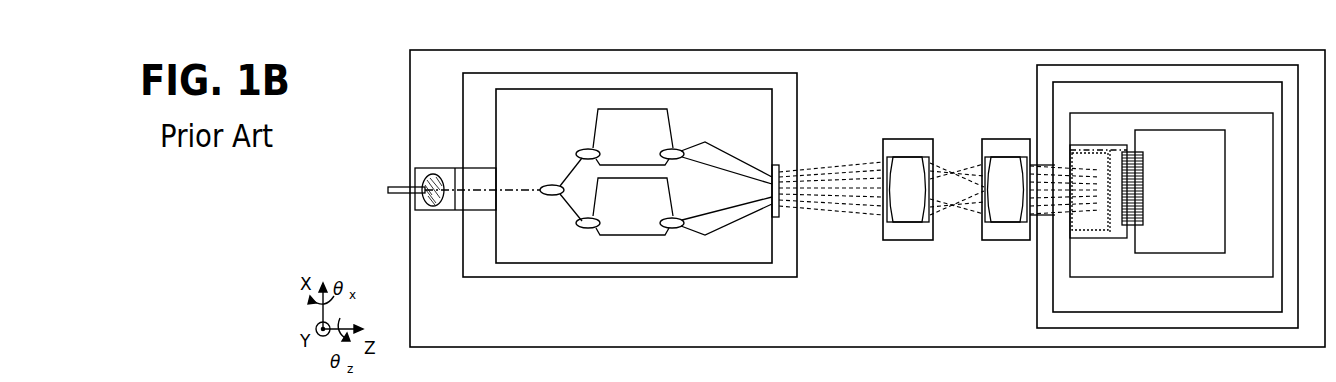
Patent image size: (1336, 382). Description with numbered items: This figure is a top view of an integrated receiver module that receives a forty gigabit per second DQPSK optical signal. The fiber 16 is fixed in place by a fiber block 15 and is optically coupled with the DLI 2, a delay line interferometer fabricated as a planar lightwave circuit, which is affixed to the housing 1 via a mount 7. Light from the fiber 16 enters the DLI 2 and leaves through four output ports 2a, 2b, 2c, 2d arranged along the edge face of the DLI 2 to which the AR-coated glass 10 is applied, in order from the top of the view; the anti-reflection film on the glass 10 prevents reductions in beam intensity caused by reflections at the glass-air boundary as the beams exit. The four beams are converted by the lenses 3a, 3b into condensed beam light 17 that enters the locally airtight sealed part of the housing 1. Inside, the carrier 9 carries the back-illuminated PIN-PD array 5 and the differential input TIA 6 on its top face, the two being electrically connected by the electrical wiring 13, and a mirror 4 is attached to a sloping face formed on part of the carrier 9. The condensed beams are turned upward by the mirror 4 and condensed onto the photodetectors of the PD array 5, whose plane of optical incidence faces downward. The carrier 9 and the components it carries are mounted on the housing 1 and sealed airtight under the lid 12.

The housing 1 is at (725, 312).
The DLI 2 is at (531, 108).
The output port 2a is at (772, 177).
The output port 2b is at (630, 206).
The output port 2c is at (726, 163).
The output port 2d is at (726, 216).
The lens 3a is at (911, 143).
The lens 3b is at (993, 143).
The mirror 4 is at (1108, 160).
The back-illuminated PIN-PD array 5 is at (1115, 231).
The differential input TIA 6 is at (1188, 231).
The mount 7 is at (608, 274).
The carrier 9 is at (1248, 151).
The AR-coated glass 10 is at (774, 218).
The lid 12 is at (1072, 99).
The electrical wiring 13 is at (1142, 164).
The fiber block 15 is at (461, 173).
The fiber 16 is at (398, 187).
The condensed beam light 17 is at (1097, 167).